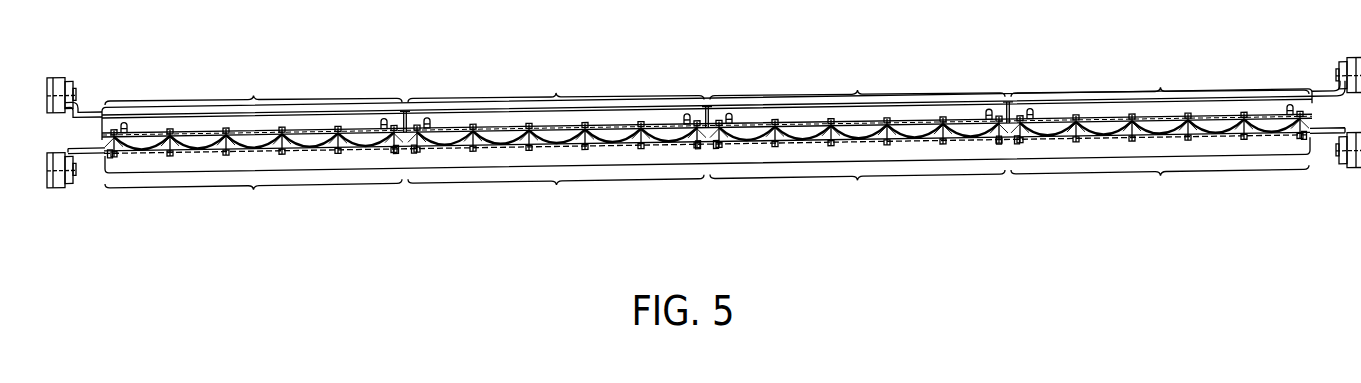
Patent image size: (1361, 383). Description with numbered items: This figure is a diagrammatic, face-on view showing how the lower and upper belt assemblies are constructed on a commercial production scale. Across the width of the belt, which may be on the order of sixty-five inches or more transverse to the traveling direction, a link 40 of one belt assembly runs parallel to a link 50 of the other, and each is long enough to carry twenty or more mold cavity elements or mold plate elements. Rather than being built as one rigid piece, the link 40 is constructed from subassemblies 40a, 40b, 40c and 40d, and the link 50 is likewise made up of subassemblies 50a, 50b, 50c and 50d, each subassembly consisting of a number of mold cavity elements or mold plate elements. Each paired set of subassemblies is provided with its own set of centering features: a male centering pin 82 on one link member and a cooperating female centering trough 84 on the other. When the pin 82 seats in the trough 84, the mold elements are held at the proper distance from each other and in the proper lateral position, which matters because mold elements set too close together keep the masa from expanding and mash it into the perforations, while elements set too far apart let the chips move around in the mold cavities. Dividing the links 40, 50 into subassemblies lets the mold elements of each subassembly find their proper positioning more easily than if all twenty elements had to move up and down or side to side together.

The link 40 is at (763, 211).
The subassembly 40a is at (253, 198).
The subassembly 40b is at (556, 194).
The subassembly 40c is at (857, 189).
The subassembly 40d is at (1160, 184).
The link 50 is at (712, 90).
The subassembly 50a is at (253, 116).
The subassembly 50b is at (556, 111).
The subassembly 50c is at (857, 106).
The subassembly 50d is at (1160, 102).
The male centering pin 82 is at (109, 132).
The female centering trough 84 is at (109, 152).